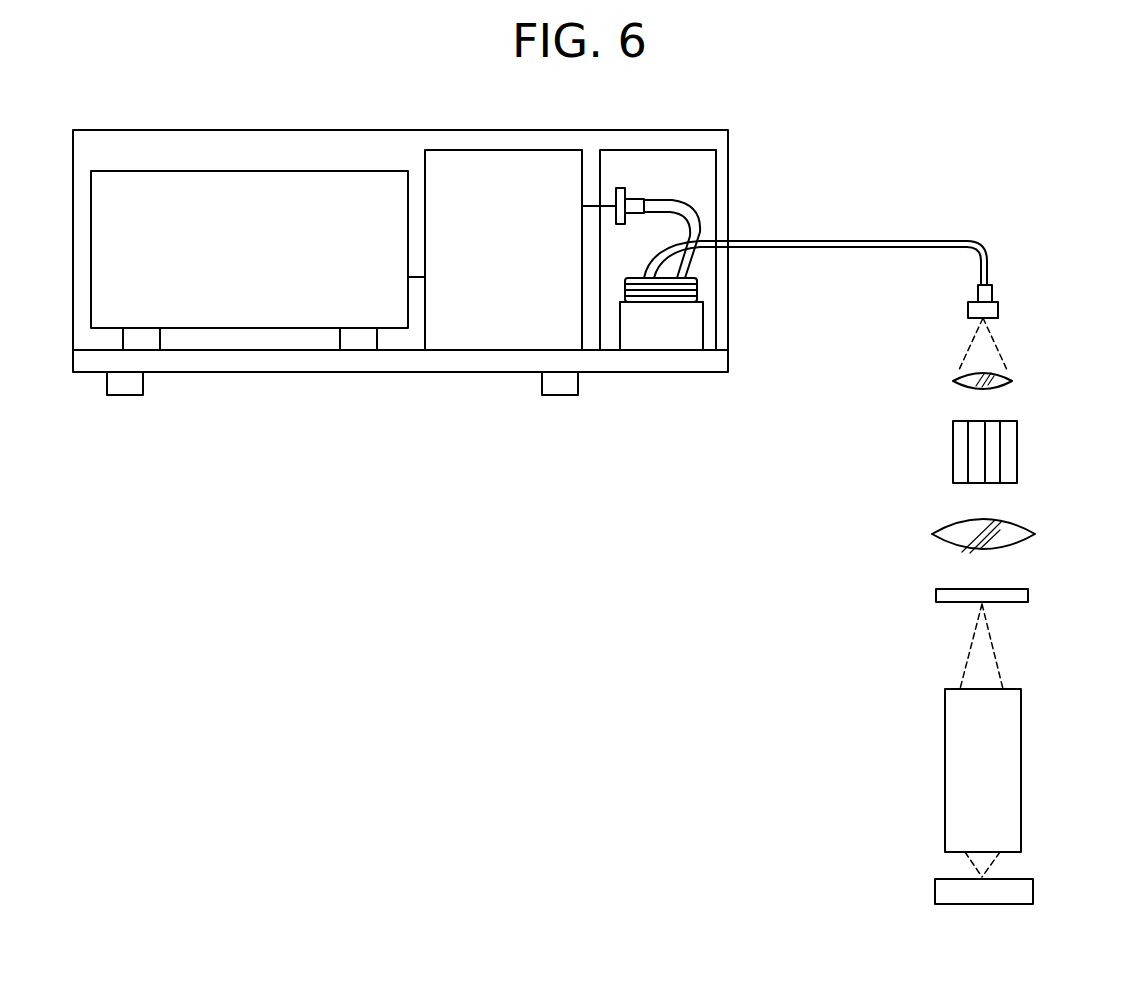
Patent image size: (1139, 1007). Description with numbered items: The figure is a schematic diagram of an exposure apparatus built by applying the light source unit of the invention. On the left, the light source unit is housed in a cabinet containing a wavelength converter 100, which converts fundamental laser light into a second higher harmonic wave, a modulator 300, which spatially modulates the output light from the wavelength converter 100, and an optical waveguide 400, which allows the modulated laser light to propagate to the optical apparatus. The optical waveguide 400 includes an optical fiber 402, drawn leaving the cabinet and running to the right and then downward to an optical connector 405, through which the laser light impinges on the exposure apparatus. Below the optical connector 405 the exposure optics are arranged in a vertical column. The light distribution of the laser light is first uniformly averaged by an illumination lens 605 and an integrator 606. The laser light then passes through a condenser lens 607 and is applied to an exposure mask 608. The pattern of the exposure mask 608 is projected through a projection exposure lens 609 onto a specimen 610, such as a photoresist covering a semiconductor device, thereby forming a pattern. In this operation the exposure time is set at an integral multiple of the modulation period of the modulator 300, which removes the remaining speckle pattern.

The wavelength converter 100 is at (268, 262).
The modulator 300 is at (528, 256).
The optical waveguide 400 is at (682, 186).
The optical fiber 402 is at (845, 241).
The optical connector 405 is at (998, 310).
The illumination lens 605 is at (1012, 381).
The integrator 606 is at (1017, 452).
The condenser lens 607 is at (1035, 534).
The exposure mask 608 is at (1028, 595).
The projection exposure lens 609 is at (1021, 740).
The specimen 610 is at (1033, 890).